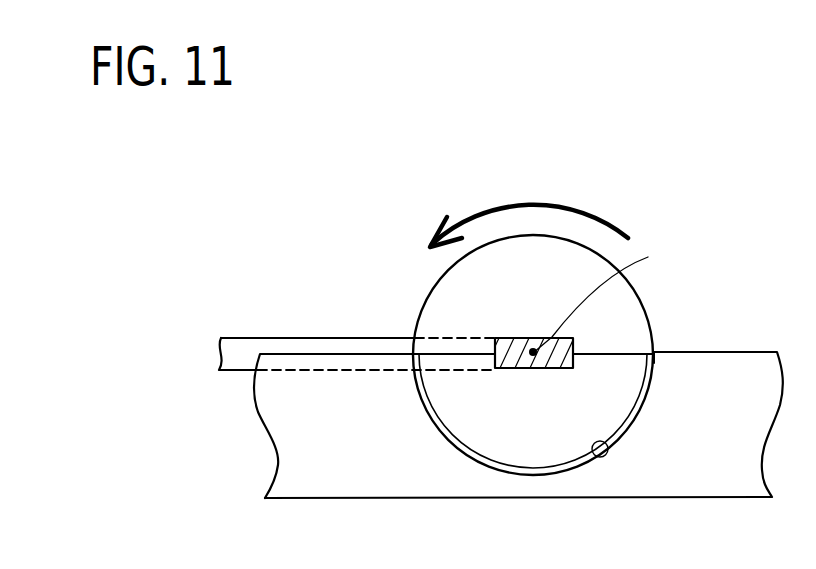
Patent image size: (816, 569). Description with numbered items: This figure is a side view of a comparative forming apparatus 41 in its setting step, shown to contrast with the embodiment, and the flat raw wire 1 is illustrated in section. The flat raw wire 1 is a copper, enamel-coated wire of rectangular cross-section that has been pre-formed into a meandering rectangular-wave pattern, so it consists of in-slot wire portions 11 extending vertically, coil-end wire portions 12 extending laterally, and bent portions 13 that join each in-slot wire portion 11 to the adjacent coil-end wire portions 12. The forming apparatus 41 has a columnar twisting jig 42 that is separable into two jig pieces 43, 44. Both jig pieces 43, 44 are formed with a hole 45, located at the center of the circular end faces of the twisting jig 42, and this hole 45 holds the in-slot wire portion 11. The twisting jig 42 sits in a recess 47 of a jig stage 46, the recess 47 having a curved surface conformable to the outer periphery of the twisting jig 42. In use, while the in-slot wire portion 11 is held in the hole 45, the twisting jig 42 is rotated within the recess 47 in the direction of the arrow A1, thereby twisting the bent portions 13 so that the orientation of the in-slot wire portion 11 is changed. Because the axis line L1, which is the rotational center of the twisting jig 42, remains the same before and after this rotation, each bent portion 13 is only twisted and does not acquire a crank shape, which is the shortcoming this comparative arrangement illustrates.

The flat raw wire 1 is at (357, 338).
The in-slot wire portion 11 is at (512, 362).
The coil-end wire portion 12 is at (302, 338).
The bent portion 13 is at (457, 338).
The forming apparatus 41 is at (667, 199).
The twisting jig 42 is at (640, 296).
The jig piece 43 is at (632, 337).
The jig piece 44 is at (628, 385).
The hole 45 is at (538, 368).
The jig stage 46 is at (740, 352).
The recess 47 is at (606, 456).
The arrow A1 is at (536, 203).
The axis line L1 is at (605, 295).